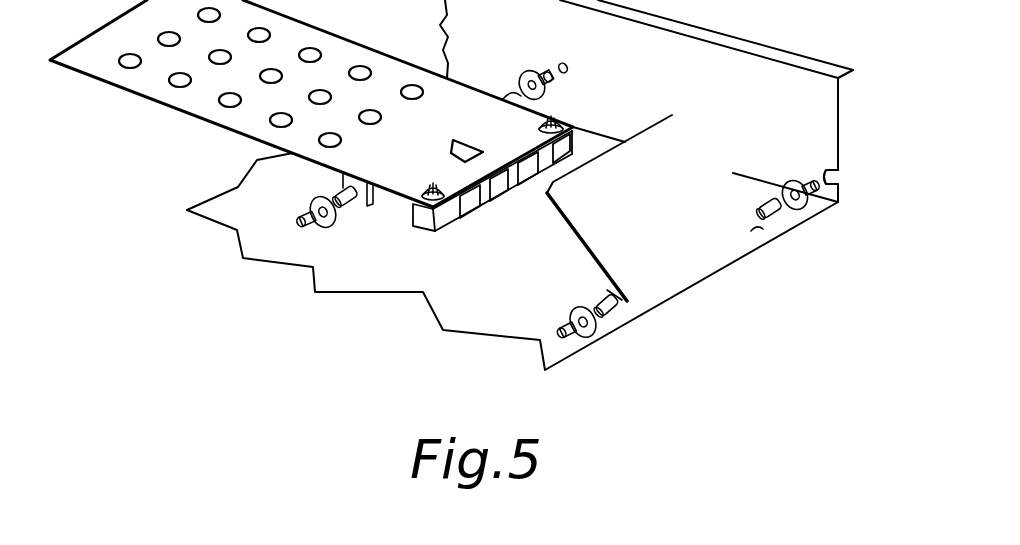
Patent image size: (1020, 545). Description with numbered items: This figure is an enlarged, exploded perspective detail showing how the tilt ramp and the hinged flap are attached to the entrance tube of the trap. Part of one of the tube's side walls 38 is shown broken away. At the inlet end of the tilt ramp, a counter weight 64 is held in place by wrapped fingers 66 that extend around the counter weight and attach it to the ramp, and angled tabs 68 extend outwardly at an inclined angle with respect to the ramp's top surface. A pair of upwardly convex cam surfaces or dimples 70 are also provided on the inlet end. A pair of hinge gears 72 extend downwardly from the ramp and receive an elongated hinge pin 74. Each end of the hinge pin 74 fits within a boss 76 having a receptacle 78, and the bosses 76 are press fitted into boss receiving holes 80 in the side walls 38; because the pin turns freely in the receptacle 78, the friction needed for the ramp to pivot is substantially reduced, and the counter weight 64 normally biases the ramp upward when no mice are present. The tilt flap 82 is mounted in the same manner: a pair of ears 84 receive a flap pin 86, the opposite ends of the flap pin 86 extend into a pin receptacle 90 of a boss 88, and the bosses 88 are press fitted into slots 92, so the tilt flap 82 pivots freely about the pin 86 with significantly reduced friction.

The side wall 38 is at (662, 90).
The counter weight 64 is at (427, 232).
The wrapped fingers 66 is at (510, 192).
The angled tabs 68 is at (550, 163).
The cam surface or dimples 70 is at (433, 188).
The hinge gears 72 is at (364, 205).
The hinge pin 74 is at (340, 190).
The boss 76 is at (312, 210).
The receptacle 78 is at (522, 80).
The boss receiving hole 80 is at (570, 67).
The tilt flap 82 is at (680, 237).
The ear 84 is at (620, 320).
The flap pin 86 is at (603, 302).
The boss 88 is at (567, 318).
The pin receptacle 90 is at (808, 214).
The slot 92 is at (840, 178).